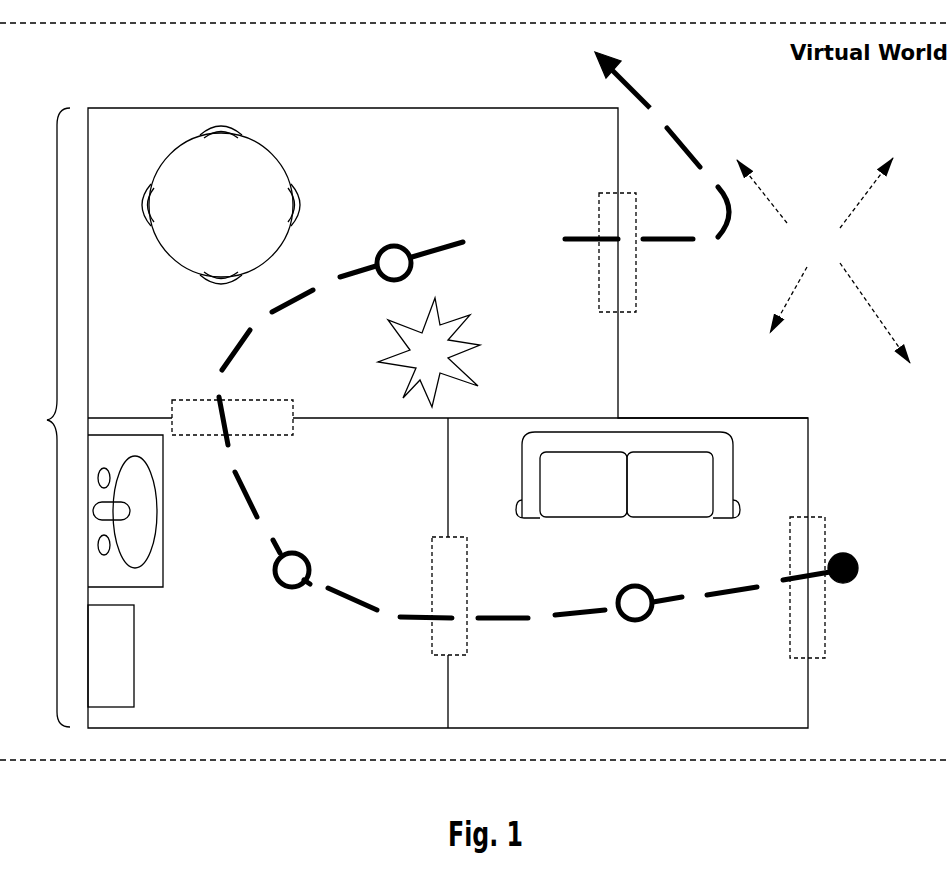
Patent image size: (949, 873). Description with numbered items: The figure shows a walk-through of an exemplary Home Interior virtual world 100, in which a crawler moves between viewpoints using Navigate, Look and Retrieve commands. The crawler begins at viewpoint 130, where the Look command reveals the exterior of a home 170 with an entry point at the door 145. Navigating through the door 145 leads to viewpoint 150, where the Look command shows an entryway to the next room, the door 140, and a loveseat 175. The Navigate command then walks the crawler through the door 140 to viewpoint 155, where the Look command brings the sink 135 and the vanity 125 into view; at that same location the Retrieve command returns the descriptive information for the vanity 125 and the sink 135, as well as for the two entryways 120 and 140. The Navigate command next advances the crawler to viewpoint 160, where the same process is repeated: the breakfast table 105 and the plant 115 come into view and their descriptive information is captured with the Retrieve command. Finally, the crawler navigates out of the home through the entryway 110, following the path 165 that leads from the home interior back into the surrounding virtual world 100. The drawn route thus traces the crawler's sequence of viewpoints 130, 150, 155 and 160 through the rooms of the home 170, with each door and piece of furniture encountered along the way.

The virtual world 100 is at (823, 260).
The breakfast table 105 is at (280, 157).
The entryway 110 is at (598, 205).
The plant 115 is at (470, 322).
The entryway 120 is at (258, 437).
The vanity 125 is at (163, 540).
The viewpoint 130 is at (843, 553).
The sink 135 is at (134, 653).
The door 140 is at (467, 642).
The door 145 is at (790, 542).
The viewpoint 150 is at (645, 619).
The viewpoint 155 is at (307, 556).
The viewpoint 160 is at (385, 246).
The path exiting to virtual world 165 is at (600, 62).
The home 170 is at (406, 418).
The loveseat 175 is at (612, 518).